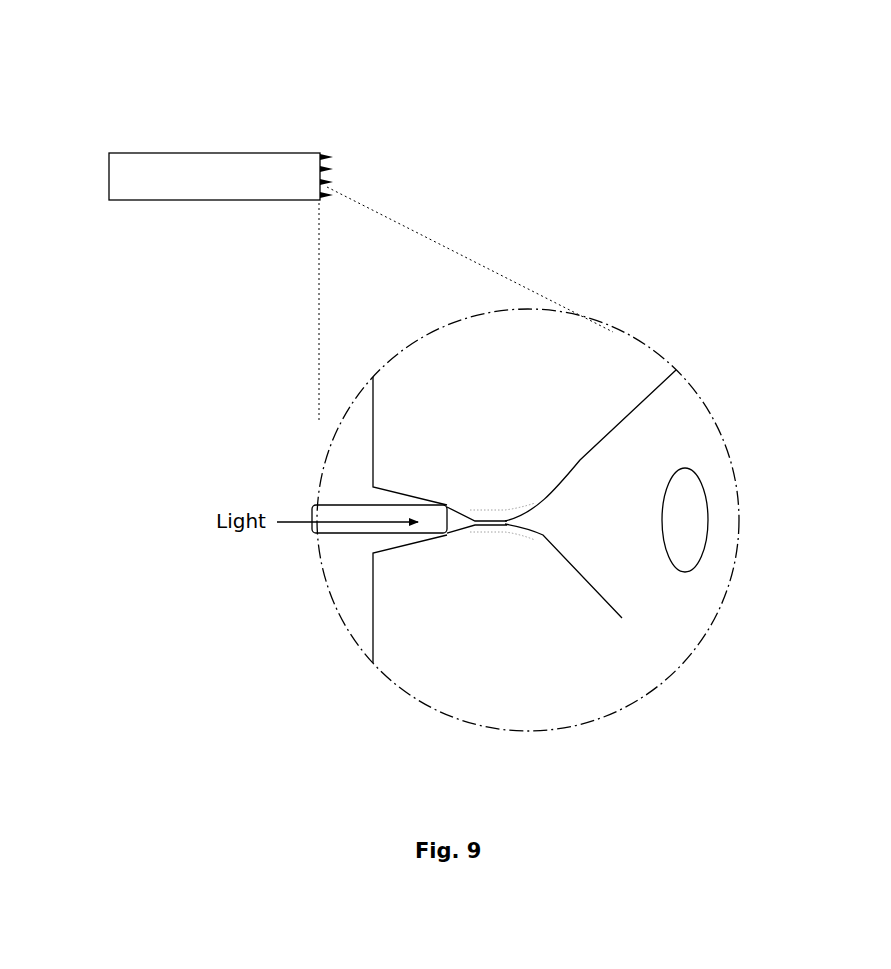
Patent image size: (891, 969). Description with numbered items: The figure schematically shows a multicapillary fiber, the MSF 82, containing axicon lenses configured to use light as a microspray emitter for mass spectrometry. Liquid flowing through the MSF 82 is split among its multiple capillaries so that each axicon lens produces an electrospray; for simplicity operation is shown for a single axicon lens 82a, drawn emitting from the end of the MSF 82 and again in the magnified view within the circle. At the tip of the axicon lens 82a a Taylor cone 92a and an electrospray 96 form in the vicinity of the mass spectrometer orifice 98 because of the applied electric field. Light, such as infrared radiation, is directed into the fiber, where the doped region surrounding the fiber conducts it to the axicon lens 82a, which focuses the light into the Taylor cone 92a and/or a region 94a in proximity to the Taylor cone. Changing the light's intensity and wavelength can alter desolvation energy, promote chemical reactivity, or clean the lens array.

The MSF 82 is at (182, 152).
The axicon lens 82a is at (320, 203).
The Taylor cone 92a is at (325, 198).
The electrospray 96 is at (617, 439).
The region in proximity to the Taylor cone 94a is at (509, 529).
The mass spectrometer orifice 98 is at (706, 487).